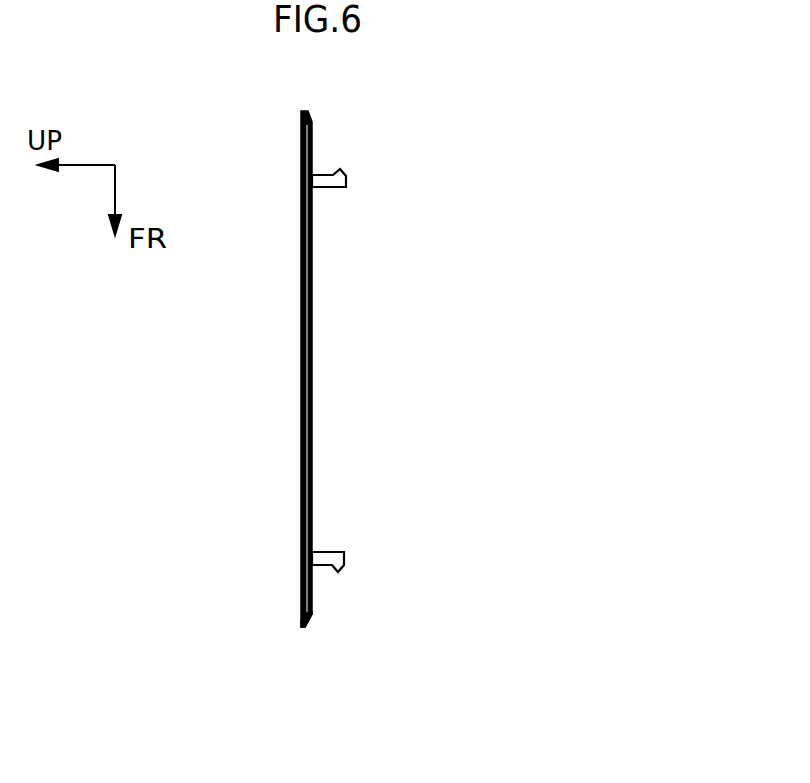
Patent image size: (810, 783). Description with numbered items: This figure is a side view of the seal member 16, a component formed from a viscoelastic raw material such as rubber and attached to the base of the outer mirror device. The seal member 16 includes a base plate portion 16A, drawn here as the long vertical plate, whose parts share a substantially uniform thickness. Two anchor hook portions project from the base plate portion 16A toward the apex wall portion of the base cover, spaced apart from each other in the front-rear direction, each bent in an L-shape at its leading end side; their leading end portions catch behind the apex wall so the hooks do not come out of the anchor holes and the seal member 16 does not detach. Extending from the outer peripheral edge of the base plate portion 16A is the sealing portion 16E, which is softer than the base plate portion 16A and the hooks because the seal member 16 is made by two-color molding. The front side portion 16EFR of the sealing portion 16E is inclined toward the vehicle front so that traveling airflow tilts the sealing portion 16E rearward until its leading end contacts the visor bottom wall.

The seal member 16 is at (385, 413).
The base plate portion 16A is at (306, 369).
The sealing portion 16E is at (302, 378).
The front side portion of sealing portion 16EFR is at (304, 628).